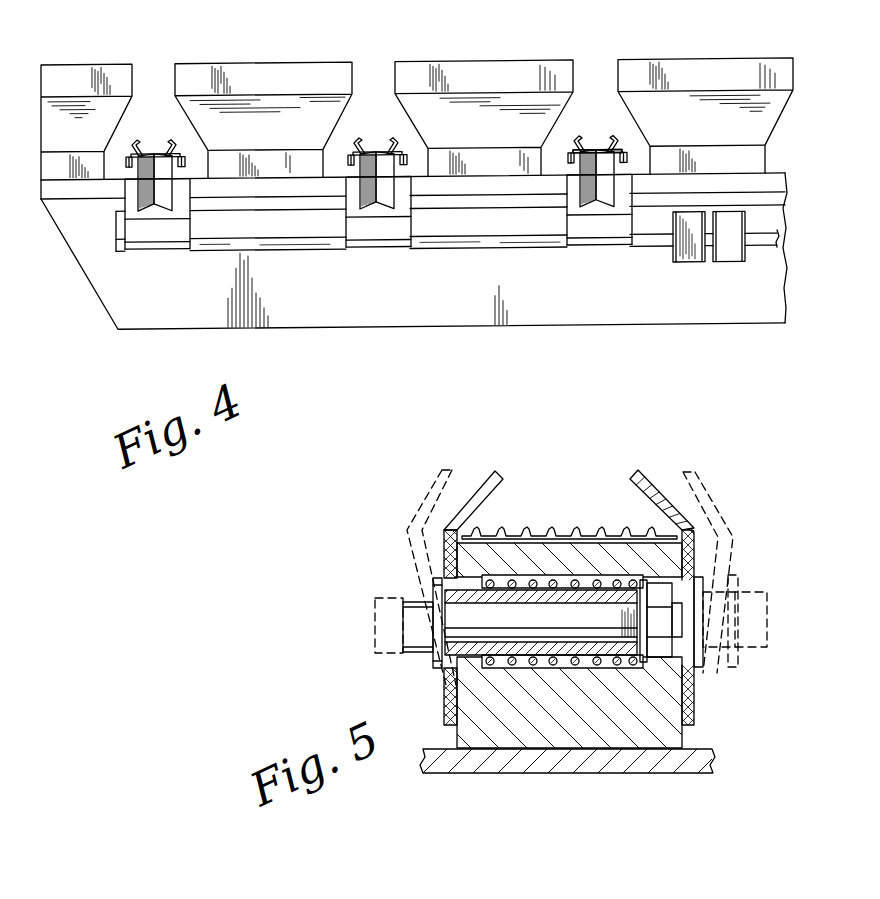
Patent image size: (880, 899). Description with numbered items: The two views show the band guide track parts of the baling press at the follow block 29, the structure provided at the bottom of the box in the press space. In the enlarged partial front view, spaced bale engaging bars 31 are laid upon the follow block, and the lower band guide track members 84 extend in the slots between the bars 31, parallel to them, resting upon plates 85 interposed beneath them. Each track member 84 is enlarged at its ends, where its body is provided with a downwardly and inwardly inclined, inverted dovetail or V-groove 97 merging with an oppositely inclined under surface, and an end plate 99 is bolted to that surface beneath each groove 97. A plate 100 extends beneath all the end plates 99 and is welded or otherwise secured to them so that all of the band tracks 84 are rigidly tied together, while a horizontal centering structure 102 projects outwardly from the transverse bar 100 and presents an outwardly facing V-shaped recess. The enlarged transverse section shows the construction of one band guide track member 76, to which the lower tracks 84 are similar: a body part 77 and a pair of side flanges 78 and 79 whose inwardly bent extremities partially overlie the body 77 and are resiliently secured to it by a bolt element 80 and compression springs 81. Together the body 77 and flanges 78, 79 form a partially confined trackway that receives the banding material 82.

In FIG. 4, the follow block 29 is at (87, 286).
In FIG. 4, the bale engaging bars 31 is at (68, 72).
In FIG. 4, the band guide track members 84 is at (140, 141).
In FIG. 4, the V-groove 97 is at (600, 160).
In FIG. 4, the end plate 99 is at (590, 238).
In FIG. 4, the plate 100 is at (281, 228).
In FIG. 4, the horizontal centering structure 102 is at (692, 269).
In FIG. 5, the band guide track members 76 is at (699, 735).
In FIG. 5, the body part 77 is at (537, 725).
In FIG. 5, the side flange 78 is at (656, 492).
In FIG. 5, the side flange 79 is at (478, 482).
In FIG. 5, the bolt element 80 is at (542, 623).
In FIG. 5, the compression spring 81 is at (516, 577).
In FIG. 5, the banding material 82 is at (549, 527).
In FIG. 5, the plate 85 is at (699, 760).